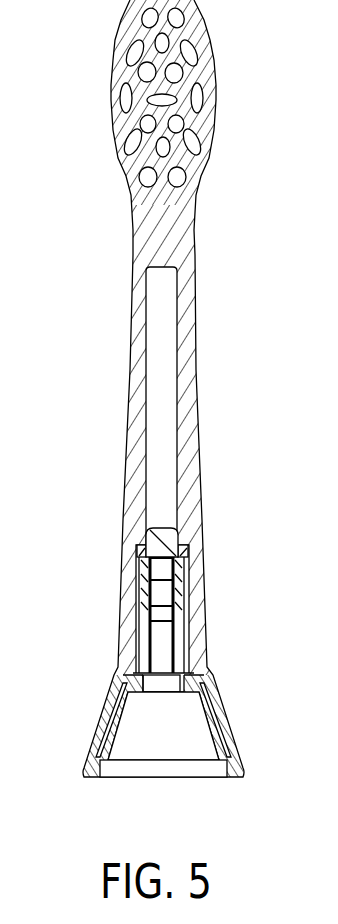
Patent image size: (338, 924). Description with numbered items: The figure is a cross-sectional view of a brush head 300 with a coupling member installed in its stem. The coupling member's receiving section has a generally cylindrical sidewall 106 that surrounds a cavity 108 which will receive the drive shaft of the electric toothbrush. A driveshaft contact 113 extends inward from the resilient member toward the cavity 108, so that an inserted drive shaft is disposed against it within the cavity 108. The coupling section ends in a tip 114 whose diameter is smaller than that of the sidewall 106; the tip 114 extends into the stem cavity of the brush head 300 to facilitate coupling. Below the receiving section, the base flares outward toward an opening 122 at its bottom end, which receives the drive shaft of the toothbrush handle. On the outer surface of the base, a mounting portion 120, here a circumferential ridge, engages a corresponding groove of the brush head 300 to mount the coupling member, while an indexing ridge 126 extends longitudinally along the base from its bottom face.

The brush head 300 is at (73, 127).
The sidewall 106 is at (185, 632).
The cavity 108 is at (146, 638).
The driveshaft contact 113 is at (161, 592).
The tip 114 is at (158, 528).
The mounting portion 120 is at (110, 743).
The opening 122 is at (177, 728).
The indexing ridge 126 is at (212, 737).